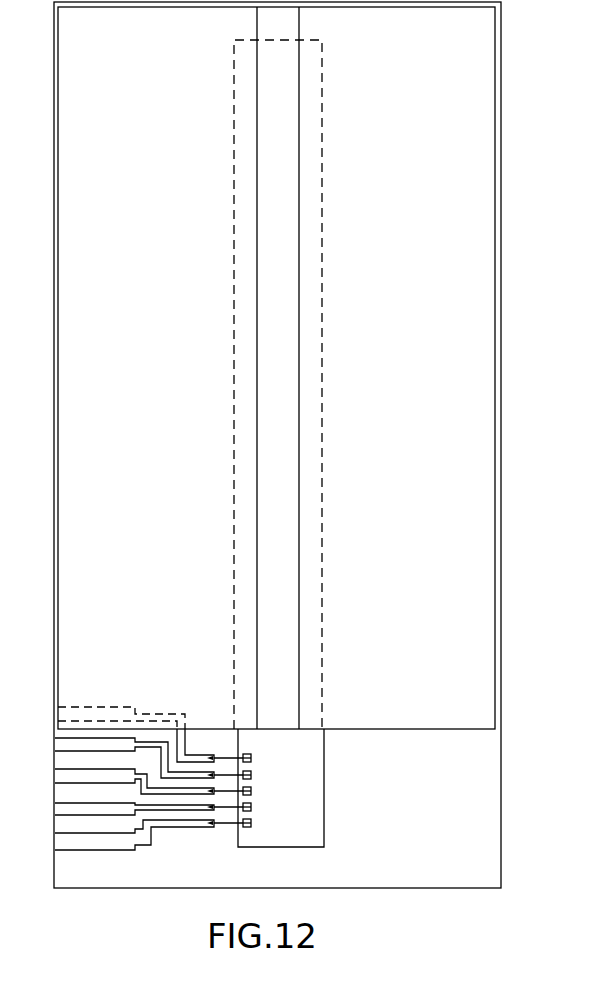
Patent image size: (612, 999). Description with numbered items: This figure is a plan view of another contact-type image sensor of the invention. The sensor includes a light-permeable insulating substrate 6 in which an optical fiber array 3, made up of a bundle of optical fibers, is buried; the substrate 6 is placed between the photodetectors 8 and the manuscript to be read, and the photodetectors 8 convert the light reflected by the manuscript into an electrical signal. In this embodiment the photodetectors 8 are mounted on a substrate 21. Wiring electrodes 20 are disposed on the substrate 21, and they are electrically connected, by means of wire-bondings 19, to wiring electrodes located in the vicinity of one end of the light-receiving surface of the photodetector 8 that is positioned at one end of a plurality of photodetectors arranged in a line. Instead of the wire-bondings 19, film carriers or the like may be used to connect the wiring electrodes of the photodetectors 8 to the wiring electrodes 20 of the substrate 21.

The optical fiber array 3 is at (290, 518).
The light-permeable insulating substrate 6 is at (477, 383).
The photodetectors 8 is at (313, 787).
The wire-bondings 19 is at (231, 826).
The wiring electrodes 20 is at (63, 843).
The substrate 21 is at (493, 846).